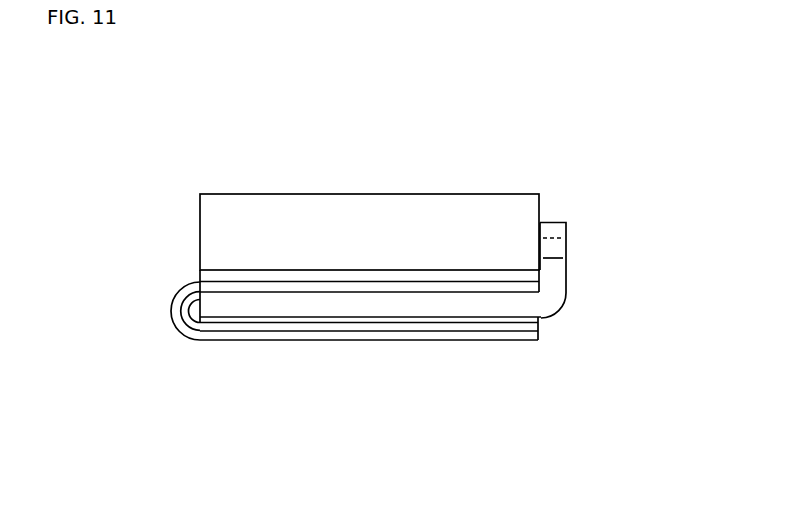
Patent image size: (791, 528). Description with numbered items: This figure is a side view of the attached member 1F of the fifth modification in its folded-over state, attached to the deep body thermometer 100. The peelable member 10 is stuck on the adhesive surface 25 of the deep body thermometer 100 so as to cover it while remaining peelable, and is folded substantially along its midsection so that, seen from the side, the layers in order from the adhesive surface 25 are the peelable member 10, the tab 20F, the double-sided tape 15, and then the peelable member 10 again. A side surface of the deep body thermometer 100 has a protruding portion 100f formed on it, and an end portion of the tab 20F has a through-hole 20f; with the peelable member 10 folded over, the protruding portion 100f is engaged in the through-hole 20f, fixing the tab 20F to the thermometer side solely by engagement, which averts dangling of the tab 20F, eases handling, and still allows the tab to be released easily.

The deep body thermometer 100 is at (382, 207).
The protruding portion 100f is at (568, 249).
The adhesive surface 25 is at (257, 275).
The attached member 1F is at (157, 286).
The through-hole 20f is at (553, 257).
The tab 20F is at (497, 313).
The double-sided tape 15 is at (425, 325).
The peelable member 10 is at (338, 336).